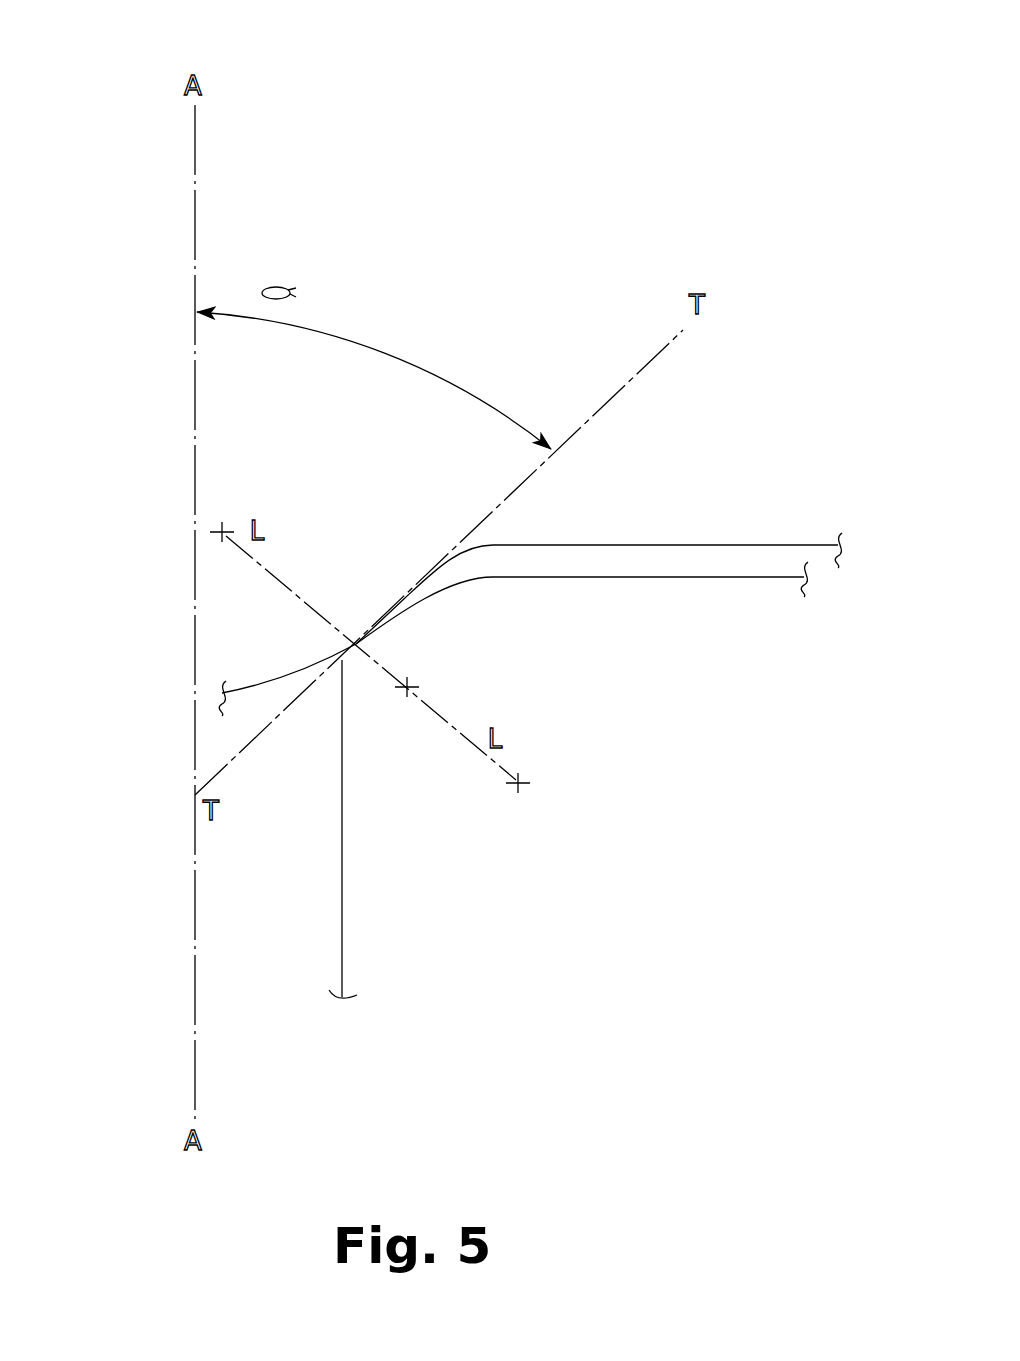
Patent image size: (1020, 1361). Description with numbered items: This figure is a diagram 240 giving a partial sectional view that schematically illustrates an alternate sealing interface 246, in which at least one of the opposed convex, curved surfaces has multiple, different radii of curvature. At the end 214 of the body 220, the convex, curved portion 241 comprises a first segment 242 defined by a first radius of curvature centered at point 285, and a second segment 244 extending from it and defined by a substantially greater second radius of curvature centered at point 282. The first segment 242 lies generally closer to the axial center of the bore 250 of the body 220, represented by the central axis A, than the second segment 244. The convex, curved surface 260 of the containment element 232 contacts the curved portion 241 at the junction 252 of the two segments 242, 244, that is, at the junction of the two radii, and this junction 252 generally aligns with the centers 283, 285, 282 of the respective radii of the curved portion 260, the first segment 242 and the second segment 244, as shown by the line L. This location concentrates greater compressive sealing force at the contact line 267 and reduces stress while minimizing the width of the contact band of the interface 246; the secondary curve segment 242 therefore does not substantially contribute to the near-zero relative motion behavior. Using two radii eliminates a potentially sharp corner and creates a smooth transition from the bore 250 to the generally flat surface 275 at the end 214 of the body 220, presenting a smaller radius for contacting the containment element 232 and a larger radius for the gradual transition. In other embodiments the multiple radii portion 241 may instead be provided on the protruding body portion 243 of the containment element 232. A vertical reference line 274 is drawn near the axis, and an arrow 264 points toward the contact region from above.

The diagram 240 is at (493, 122).
The end of body 214 is at (684, 572).
The surface 275 is at (630, 577).
The second segment 244 is at (377, 632).
The convex, curved portion 241 is at (441, 593).
The convex, curved surface 260 is at (267, 690).
The vertical reference line 274 is at (342, 890).
The center of radius of curvature 283 is at (217, 525).
The center point 285 is at (411, 691).
The center point 282 is at (529, 791).
The sealing interface 246 is at (258, 628).
The contact line 267 is at (348, 645).
The junction point 264 is at (359, 624).
The first segment 242 is at (349, 660).
The junction 252 is at (358, 655).
The protruding body portion 243 is at (411, 496).
The containment element 232 is at (658, 409).
The body 220 is at (608, 703).
The bore 250 is at (243, 923).